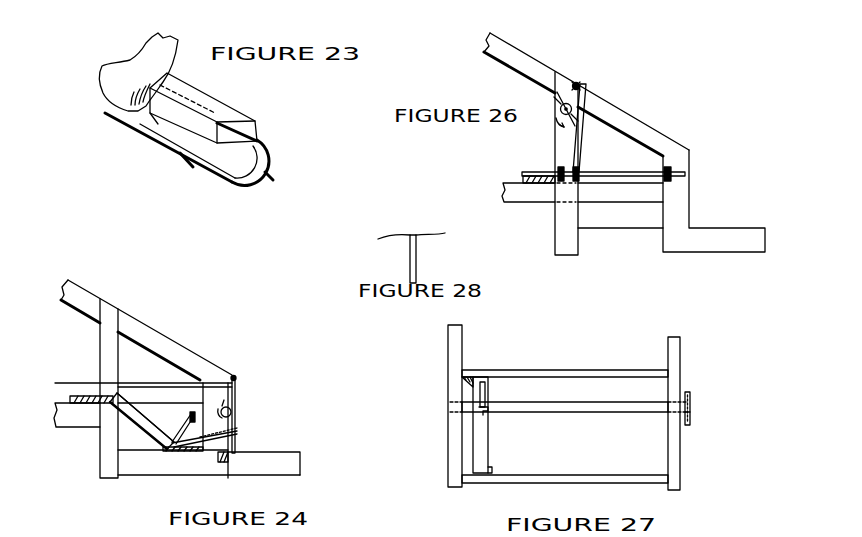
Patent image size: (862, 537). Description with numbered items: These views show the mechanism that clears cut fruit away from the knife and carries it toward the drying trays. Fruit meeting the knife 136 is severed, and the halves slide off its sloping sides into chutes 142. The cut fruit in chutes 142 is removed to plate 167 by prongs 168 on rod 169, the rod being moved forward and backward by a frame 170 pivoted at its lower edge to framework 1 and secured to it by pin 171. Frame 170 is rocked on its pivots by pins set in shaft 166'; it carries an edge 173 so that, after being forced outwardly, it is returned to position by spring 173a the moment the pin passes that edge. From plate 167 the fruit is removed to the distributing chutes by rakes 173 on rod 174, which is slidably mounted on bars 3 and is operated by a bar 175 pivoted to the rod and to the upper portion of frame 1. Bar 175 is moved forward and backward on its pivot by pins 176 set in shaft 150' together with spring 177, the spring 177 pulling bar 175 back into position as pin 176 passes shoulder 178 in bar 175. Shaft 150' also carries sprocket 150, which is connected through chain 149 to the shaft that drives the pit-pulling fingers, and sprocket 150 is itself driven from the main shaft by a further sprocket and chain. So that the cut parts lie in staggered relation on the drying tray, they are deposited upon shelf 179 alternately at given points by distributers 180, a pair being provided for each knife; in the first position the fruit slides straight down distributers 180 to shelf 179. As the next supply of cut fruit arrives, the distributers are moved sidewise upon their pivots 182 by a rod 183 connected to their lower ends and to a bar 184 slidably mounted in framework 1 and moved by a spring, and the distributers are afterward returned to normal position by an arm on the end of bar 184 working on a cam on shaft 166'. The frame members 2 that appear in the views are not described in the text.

In FIG. 26, the frame 1 is at (555, 226).
In FIG. 24, the frame 1 is at (102, 478).
In FIG. 27, the frame 1 is at (448, 444).
In FIG. 26, the beam / rail member 2 is at (542, 63).
In FIG. 24, the beam / rail member 2 is at (150, 338).
In FIG. 27, the bar 3 is at (598, 372).
In FIG. 23, the knife 136 is at (150, 42).
In FIG. 23, the chutes 142 is at (187, 130).
In FIG. 27, the chain 149 is at (691, 393).
In FIG. 27, the sprocket 150 is at (709, 404).
In FIG. 26, the shaft 150' is at (543, 127).
In FIG. 27, the shaft 150' is at (569, 401).
In FIG. 24, the shaft 166' is at (246, 409).
In FIG. 26, the plate 167 is at (542, 188).
In FIG. 24, the plate 167 is at (97, 402).
In FIG. 23, the prongs 168 is at (144, 137).
In FIG. 23, the rod 169 is at (268, 168).
In FIG. 24, the rod 169 is at (128, 383).
In FIG. 24, the frame 170 is at (236, 386).
In FIG. 24, the pin 171 is at (236, 377).
In FIG. 26, the rakes 173 is at (533, 157).
In FIG. 28, the rakes 173 is at (428, 232).
In FIG. 24, the spring 173a is at (233, 440).
In FIG. 26, the rod 174 is at (600, 173).
In FIG. 28, the rod 174 is at (418, 258).
In FIG. 27, the rod 174 is at (493, 470).
In FIG. 26, the bar 175 is at (578, 151).
In FIG. 27, the bar 175 is at (488, 441).
In FIG. 26, the pins 176 is at (558, 98).
In FIG. 27, the pins 176 is at (486, 390).
In FIG. 26, the spring 177 is at (580, 88).
In FIG. 27, the spring 177 is at (464, 372).
In FIG. 27, the shoulder 178 is at (490, 406).
In FIG. 24, the shelf 179 is at (183, 452).
In FIG. 24, the distributers 180 is at (137, 423).
In FIG. 24, the pivots 182 is at (125, 397).
In FIG. 24, the rod 183 is at (186, 426).
In FIG. 24, the bar 184 is at (180, 410).